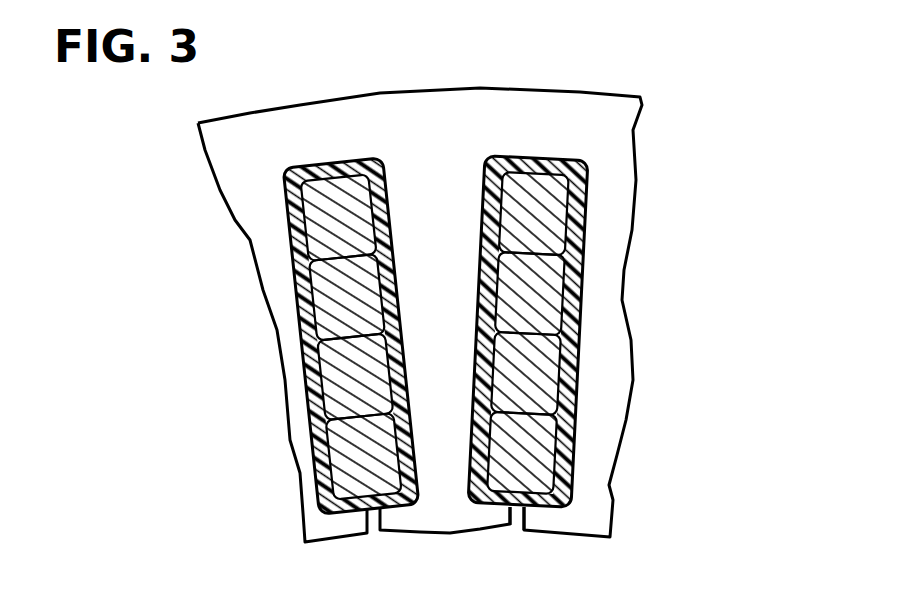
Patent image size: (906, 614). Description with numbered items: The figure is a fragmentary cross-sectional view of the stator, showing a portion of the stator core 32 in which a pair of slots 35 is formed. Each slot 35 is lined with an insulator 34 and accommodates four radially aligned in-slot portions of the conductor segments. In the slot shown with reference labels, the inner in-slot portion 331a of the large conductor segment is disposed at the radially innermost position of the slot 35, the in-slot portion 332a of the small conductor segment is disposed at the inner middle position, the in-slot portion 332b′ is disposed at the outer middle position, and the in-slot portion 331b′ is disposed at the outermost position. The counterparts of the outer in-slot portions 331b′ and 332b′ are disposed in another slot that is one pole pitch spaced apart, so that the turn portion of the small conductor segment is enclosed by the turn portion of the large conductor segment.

The stator core 32 is at (415, 112).
The insulator 34 is at (590, 170).
The in-slot portion 331b′ is at (582, 220).
The in-slot portion 332b′ is at (542, 285).
The in-slot portion 332a is at (532, 382).
The inner in-slot portion 331a is at (528, 450).
The slot 35 is at (514, 500).